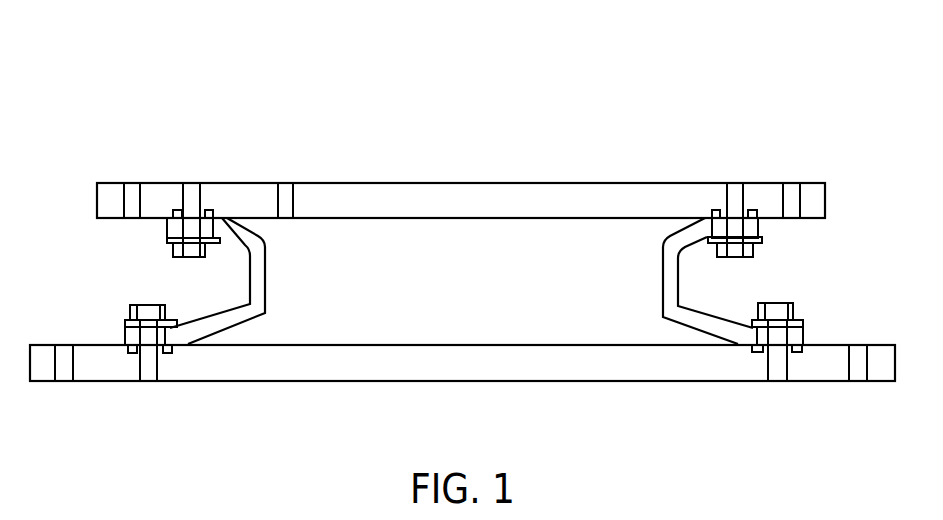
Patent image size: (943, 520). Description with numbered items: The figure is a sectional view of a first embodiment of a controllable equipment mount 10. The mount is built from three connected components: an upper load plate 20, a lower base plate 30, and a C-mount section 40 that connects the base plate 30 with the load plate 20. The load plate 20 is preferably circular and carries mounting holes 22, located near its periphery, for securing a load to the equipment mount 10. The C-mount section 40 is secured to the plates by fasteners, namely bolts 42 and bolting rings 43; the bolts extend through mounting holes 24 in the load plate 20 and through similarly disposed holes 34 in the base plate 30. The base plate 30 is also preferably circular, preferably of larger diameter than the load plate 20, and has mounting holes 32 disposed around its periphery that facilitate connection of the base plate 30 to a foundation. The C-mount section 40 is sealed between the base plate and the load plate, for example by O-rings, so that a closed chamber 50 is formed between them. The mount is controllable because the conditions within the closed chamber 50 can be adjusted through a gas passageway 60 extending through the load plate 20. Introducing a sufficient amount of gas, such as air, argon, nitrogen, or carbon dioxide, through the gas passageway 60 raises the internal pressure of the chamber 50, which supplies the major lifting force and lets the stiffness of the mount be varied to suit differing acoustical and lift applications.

The controllable equipment mount 10 is at (672, 66).
The load plate 20 is at (395, 183).
The mounting holes 22 is at (132, 190).
The mounting holes 24 is at (190, 188).
The base plate 30 is at (392, 368).
The mounting holes 32 is at (857, 375).
The holes 34 is at (147, 370).
The C-mount section 40 is at (260, 288).
The bolts 42 is at (755, 250).
The bolting rings 43 is at (170, 243).
The closed chamber 50 is at (463, 287).
The gas passageway 60 is at (285, 190).